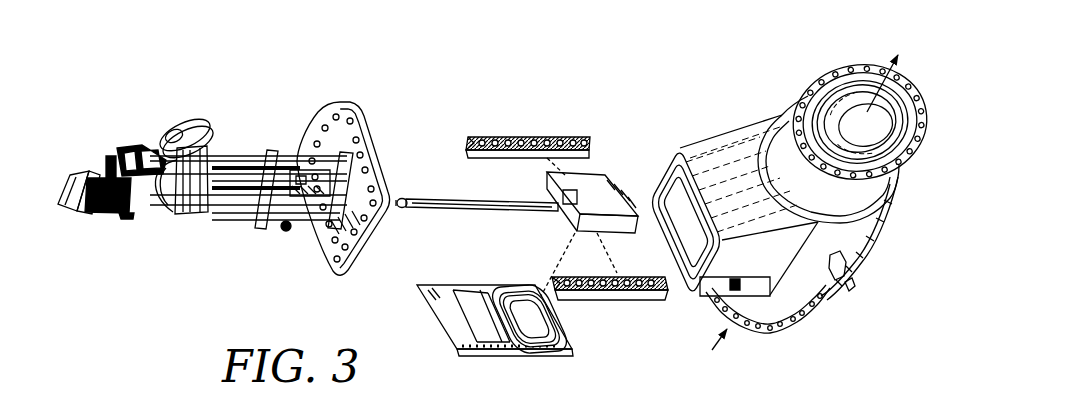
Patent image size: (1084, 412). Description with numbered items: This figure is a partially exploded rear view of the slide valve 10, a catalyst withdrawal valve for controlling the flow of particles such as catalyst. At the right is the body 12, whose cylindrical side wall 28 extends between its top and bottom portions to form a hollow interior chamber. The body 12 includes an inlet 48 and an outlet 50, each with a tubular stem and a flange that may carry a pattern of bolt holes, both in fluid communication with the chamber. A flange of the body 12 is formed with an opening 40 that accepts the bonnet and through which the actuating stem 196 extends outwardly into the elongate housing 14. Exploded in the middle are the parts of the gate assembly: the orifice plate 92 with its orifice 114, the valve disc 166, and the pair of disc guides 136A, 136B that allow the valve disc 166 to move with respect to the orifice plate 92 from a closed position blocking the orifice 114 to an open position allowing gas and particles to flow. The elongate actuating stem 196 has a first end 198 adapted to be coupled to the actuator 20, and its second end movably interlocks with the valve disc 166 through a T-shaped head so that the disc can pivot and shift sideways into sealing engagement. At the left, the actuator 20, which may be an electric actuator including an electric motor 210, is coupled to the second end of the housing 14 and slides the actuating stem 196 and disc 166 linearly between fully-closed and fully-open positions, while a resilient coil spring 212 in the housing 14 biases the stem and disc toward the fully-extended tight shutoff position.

The valve 10 is at (566, 96).
The body 12 is at (875, 238).
The elongate housing 14 is at (216, 226).
The actuator 20 is at (103, 215).
The cylindrical side wall 28 is at (732, 128).
The opening 40 is at (686, 204).
The inlet 48 is at (764, 328).
The outlet 50 is at (825, 64).
The orifice plate 92 is at (487, 357).
The orifice 114 is at (510, 293).
The disc guide 136A is at (520, 142).
The disc guide 136B is at (600, 298).
The valve disc 166 is at (597, 172).
The actuating stem 196 is at (506, 189).
The first end 198 is at (406, 193).
The electric motor 210 is at (130, 147).
The resilient coil spring 212 is at (251, 166).